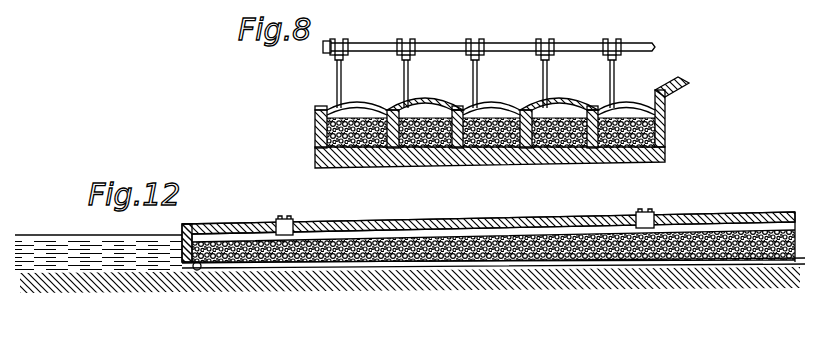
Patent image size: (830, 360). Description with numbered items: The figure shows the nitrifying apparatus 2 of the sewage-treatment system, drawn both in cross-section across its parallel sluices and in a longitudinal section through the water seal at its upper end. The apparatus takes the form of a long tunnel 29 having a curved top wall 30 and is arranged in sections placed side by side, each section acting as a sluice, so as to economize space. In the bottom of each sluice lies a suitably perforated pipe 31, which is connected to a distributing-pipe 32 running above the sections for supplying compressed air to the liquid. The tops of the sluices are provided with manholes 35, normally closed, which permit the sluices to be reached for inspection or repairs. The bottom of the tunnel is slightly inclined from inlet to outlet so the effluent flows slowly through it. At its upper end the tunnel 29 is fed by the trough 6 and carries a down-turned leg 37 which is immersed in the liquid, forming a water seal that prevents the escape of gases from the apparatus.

In FIG. 8, the nitrifying apparatus 2 is at (425, 91).
In FIG. 12, the nitrifying apparatus 2 is at (488, 231).
In FIG. 12, the trough 6 is at (81, 240).
In FIG. 8, the tunnel 29 is at (665, 105).
In FIG. 12, the tunnel 29 is at (732, 236).
In FIG. 8, the curved top wall 30 is at (558, 98).
In FIG. 12, the curved top wall 30 is at (541, 221).
In FIG. 8, the perforated pipe 31 is at (383, 153).
In FIG. 12, the perforated pipe 31 is at (550, 263).
In FIG. 8, the distributing-pipe 32 is at (489, 66).
In FIG. 8, the manhole 35 is at (360, 103).
In FIG. 12, the manhole 35 is at (291, 216).
In FIG. 12, the down-turned leg 37 is at (181, 246).